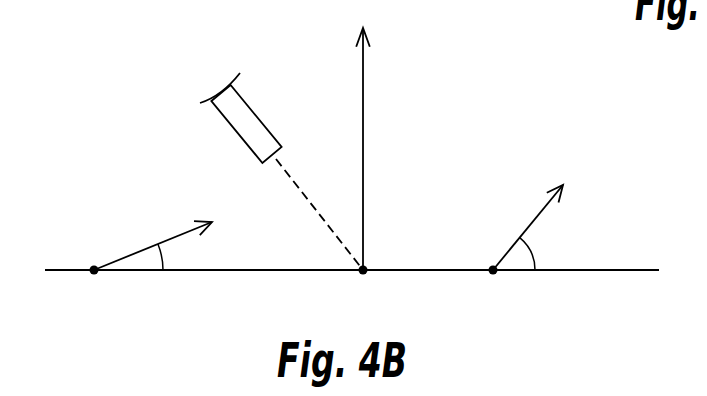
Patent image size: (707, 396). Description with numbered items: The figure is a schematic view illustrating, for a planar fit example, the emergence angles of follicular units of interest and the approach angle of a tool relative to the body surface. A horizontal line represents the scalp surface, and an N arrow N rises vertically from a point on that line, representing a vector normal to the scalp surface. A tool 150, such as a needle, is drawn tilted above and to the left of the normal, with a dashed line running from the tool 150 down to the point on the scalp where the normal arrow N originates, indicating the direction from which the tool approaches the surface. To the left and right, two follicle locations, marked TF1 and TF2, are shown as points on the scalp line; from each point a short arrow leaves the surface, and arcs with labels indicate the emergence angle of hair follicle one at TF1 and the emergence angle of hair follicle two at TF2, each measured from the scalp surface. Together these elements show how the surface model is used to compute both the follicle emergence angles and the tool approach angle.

The tool 150 is at (260, 118).
The N arrow N is at (363, 135).
The first target position T_F1 TF1 is at (146, 277).
The second target position T_F2 TF2 is at (526, 259).